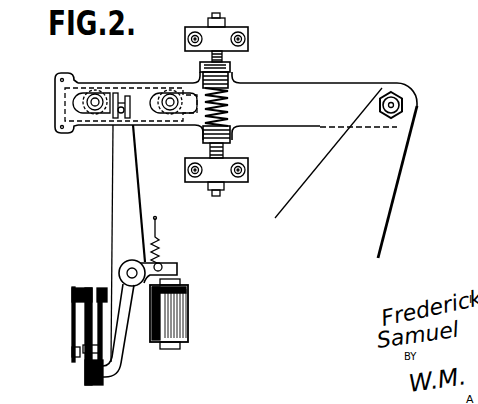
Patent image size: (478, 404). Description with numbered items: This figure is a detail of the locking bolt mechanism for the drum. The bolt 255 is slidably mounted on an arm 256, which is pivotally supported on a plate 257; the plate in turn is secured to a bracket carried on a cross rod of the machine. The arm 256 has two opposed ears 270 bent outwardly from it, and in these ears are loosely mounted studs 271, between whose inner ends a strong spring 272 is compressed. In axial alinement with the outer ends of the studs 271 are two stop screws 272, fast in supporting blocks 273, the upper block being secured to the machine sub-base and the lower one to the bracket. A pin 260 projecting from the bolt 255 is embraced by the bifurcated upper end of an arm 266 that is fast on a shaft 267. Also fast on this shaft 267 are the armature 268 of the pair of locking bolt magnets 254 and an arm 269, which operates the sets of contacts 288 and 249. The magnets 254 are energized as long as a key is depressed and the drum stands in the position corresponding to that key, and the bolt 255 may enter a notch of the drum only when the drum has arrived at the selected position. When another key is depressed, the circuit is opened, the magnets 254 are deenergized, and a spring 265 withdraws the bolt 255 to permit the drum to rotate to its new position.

The set of contacts 249 is at (92, 343).
The locking bolt magnets 254 is at (166, 316).
The bolt 255 is at (182, 82).
The arm 256 is at (327, 90).
The plate 257 is at (375, 203).
The pin 260 is at (110, 126).
The spring 265 is at (159, 247).
The arm 266 is at (120, 203).
The shaft 267 is at (128, 273).
The armature 268 is at (161, 265).
The arm 269 is at (122, 371).
The ears 270 is at (229, 70).
The studs 271 is at (228, 62).
The spring and stop screws 272 is at (224, 16).
The supporting blocks 273 is at (248, 33).
The set of contacts 288 is at (75, 362).